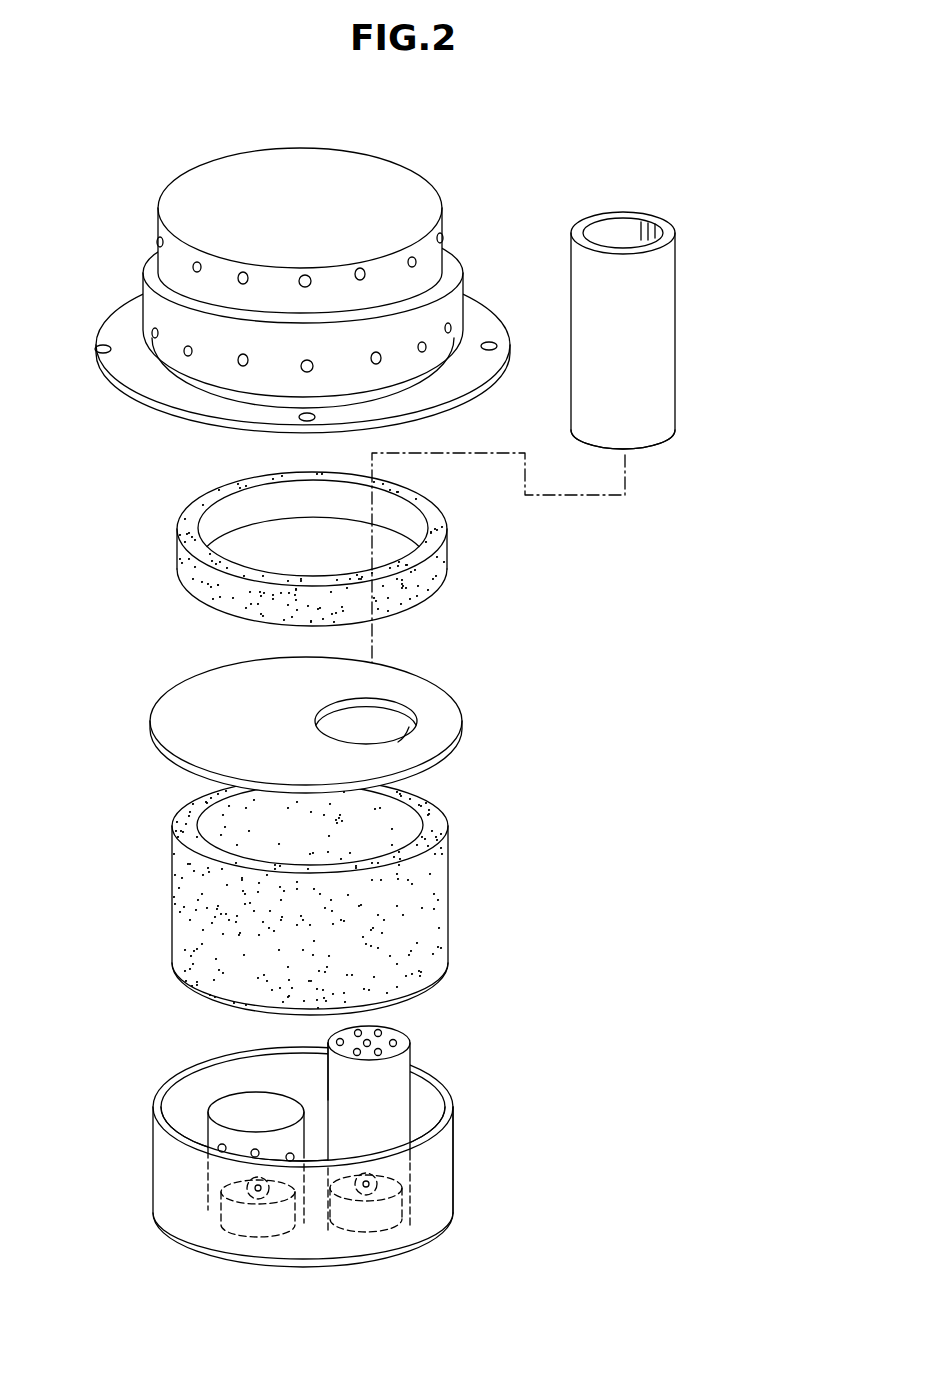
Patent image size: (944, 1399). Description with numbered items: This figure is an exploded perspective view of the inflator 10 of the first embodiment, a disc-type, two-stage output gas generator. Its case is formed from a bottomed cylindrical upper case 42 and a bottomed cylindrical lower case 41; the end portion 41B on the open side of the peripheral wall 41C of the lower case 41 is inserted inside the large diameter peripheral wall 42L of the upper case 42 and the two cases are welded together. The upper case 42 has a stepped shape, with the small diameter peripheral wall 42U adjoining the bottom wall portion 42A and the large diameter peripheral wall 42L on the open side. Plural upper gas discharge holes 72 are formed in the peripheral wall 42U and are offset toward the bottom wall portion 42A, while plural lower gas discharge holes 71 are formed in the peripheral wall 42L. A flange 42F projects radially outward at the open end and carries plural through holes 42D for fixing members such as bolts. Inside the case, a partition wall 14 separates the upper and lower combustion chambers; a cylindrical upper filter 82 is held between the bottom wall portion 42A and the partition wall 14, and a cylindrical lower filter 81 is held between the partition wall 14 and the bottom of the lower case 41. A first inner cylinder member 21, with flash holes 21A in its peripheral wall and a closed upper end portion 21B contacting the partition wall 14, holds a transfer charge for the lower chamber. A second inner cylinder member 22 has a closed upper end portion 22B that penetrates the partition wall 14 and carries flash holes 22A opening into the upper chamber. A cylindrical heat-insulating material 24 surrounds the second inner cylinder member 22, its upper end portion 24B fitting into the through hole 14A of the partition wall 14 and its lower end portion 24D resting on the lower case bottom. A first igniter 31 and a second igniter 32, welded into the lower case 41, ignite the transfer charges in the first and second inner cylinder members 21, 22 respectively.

The inflator 10 is at (507, 151).
The partition wall 14 is at (310, 715).
The through hole 14A is at (415, 717).
The first inner cylinder member 21 is at (191, 1125).
The flash holes 21A is at (245, 1155).
The upper end portion 21B is at (228, 1100).
The second inner cylinder member 22 is at (339, 1115).
The flash holes 22A is at (396, 1029).
The upper end portion 22B is at (330, 1040).
The heat-insulating material 24 is at (670, 318).
The upper end portion 24B is at (600, 230).
The lower end portion 24D is at (650, 449).
The first igniter 31 is at (228, 1236).
The second igniter 32 is at (400, 1217).
The lower case 41 is at (307, 1136).
The end portion 41B is at (448, 1107).
The peripheral wall 41C is at (455, 1155).
The upper case 42 is at (298, 282).
The bottom wall portion 42A is at (258, 172).
The peripheral wall 42U is at (351, 202).
The peripheral wall 42L is at (298, 348).
The flange 42F is at (128, 365).
The through holes 42D is at (100, 346).
The lower gas discharge holes 71 is at (240, 366).
The upper gas discharge holes 72 is at (308, 276).
The lower filter 81 is at (172, 898).
The upper filter 82 is at (178, 565).